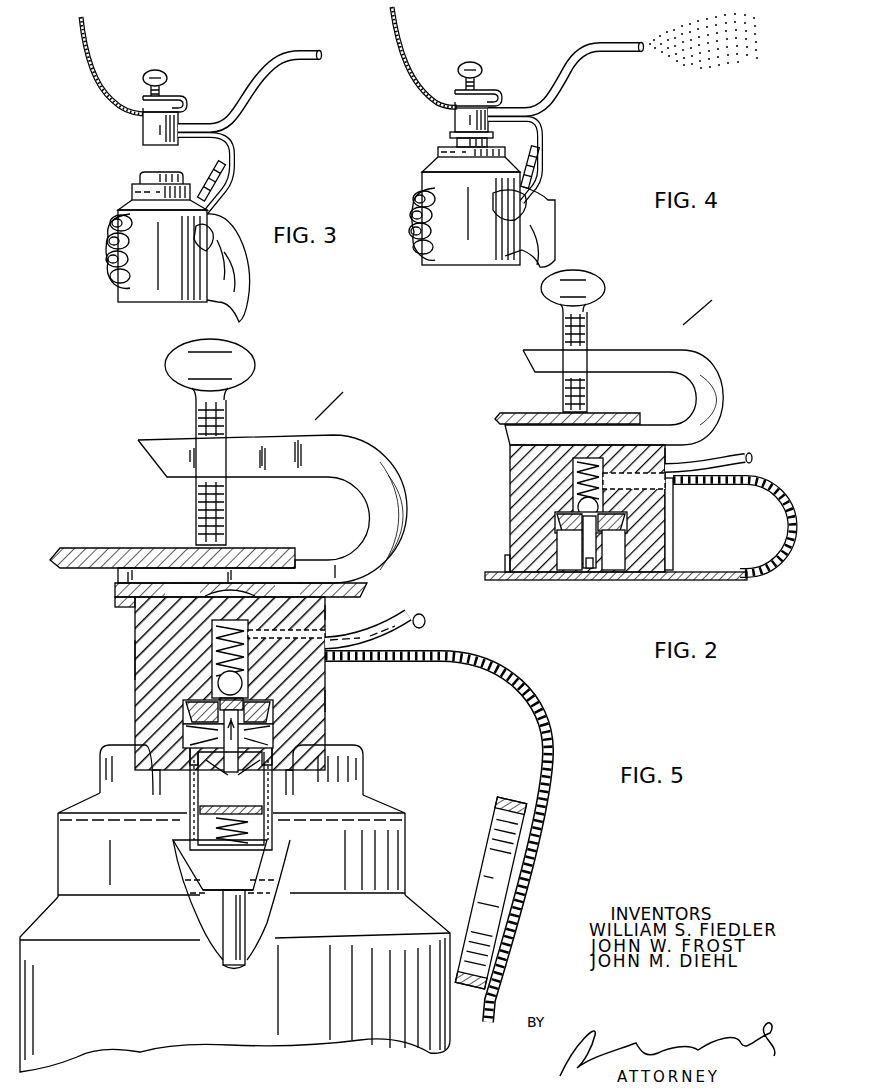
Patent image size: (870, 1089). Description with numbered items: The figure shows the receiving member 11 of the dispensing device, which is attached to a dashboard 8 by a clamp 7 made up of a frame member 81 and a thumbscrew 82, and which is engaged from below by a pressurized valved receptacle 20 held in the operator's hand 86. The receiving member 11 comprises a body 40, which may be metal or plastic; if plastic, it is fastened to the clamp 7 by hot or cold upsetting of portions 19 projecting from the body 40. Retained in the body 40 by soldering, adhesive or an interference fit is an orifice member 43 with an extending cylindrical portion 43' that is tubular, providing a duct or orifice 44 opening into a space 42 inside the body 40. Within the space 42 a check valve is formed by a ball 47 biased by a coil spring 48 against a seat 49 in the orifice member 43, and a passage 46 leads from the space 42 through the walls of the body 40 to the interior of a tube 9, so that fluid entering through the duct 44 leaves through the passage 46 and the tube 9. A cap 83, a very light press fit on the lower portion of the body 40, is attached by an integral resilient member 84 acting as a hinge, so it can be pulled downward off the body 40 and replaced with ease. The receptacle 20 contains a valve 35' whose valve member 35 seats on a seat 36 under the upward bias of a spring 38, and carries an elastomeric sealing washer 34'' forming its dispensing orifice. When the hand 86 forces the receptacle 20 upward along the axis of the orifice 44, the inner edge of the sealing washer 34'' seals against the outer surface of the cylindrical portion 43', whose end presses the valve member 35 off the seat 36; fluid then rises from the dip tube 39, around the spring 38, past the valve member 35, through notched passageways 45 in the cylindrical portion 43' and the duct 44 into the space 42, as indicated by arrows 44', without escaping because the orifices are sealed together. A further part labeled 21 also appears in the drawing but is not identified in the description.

In FIG. 3, the clamp 7 is at (181, 90).
In FIG. 4, the clamp 7 is at (490, 84).
In FIG. 2, the clamp 7 is at (701, 302).
In FIG. 5, the clamp 7 is at (333, 397).
In FIG. 3, the dashboard 8 is at (96, 58).
In FIG. 4, the dashboard 8 is at (406, 54).
In FIG. 2, the dashboard 8 is at (522, 413).
In FIG. 5, the dashboard 8 is at (108, 548).
In FIG. 3, the tube 9 is at (290, 50).
In FIG. 4, the tube 9 is at (584, 43).
In FIG. 2, the tube 9 is at (714, 462).
In FIG. 5, the tube 9 is at (393, 618).
In FIG. 3, the receiving member 11 is at (143, 128).
In FIG. 4, the receiving member 11 is at (455, 121).
In FIG. 5, the receiving member 11 is at (92, 660).
In FIG. 5, the portions 19 is at (302, 583).
In FIG. 3, the pressurized valved receptacle 20 is at (111, 197).
In FIG. 4, the pressurized valved receptacle 20 is at (414, 155).
In FIG. 5, the pressurized valved receptacle 20 is at (72, 789).
In FIG. 5, the dip tube 21 is at (262, 922).
In FIG. 5, the sealing washer 34'' is at (231, 770).
In FIG. 5, the valve member 35 is at (261, 799).
In FIG. 5, the valve 35' is at (214, 900).
In FIG. 5, the seat 36 is at (200, 838).
In FIG. 5, the spring 38 is at (262, 852).
In FIG. 5, the dip tube 39 is at (224, 955).
In FIG. 2, the body 40 is at (510, 482).
In FIG. 5, the body 40 is at (135, 630).
In FIG. 2, the space 42 is at (622, 516).
In FIG. 5, the space 42 is at (325, 612).
In FIG. 2, the orifice member 43 is at (652, 547).
In FIG. 5, the orifice member 43 is at (345, 699).
In FIG. 2, the extending cylindrical portion 43' is at (610, 585).
In FIG. 5, the extending cylindrical portion 43' is at (292, 741).
In FIG. 2, the duct or orifice 44 is at (576, 560).
In FIG. 5, the duct or orifice 44 is at (186, 711).
In FIG. 5, the arrows 44' is at (223, 766).
In FIG. 5, the notched passageways 45 is at (208, 775).
In FIG. 2, the passage 46 is at (668, 457).
In FIG. 5, the passage 46 is at (325, 632).
In FIG. 2, the ball 47 is at (510, 508).
In FIG. 5, the ball 47 is at (212, 683).
In FIG. 2, the coil spring 48 is at (667, 497).
In FIG. 5, the coil spring 48 is at (250, 597).
In FIG. 5, the seat 49 is at (248, 672).
In FIG. 2, the frame member 81 is at (612, 352).
In FIG. 5, the frame member 81 is at (257, 438).
In FIG. 2, the thumbscrew 82 is at (598, 290).
In FIG. 5, the thumbscrew 82 is at (245, 358).
In FIG. 3, the cap 83 is at (224, 186).
In FIG. 4, the cap 83 is at (540, 166).
In FIG. 2, the cap 83 is at (518, 581).
In FIG. 5, the cap 83 is at (530, 869).
In FIG. 3, the integral resilient member 84 is at (235, 142).
In FIG. 4, the integral resilient member 84 is at (543, 136).
In FIG. 2, the integral resilient member 84 is at (771, 580).
In FIG. 5, the integral resilient member 84 is at (526, 712).
In FIG. 3, the operator's hand 86 is at (245, 286).
In FIG. 4, the operator's hand 86 is at (556, 232).